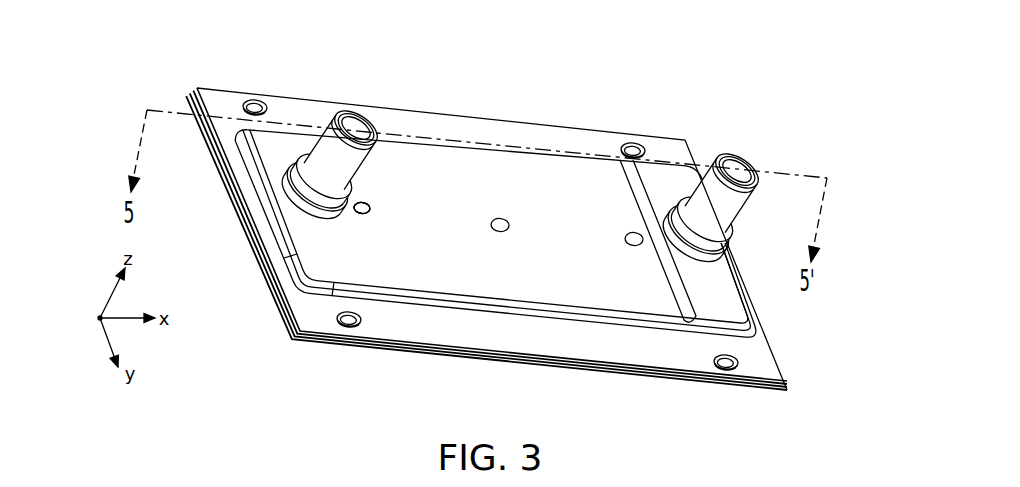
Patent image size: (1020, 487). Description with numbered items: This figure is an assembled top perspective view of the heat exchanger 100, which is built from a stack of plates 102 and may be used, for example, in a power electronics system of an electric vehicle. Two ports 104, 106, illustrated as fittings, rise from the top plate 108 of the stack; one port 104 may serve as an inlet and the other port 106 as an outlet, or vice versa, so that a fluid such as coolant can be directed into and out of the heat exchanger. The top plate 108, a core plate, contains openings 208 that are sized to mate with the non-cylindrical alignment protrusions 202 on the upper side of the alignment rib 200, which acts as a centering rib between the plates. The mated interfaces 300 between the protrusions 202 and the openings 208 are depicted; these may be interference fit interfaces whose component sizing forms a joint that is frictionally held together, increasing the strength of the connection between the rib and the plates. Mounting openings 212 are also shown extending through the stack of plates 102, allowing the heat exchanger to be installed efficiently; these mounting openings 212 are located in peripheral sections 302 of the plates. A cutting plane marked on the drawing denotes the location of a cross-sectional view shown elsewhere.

The heat exchanger 100 is at (128, 80).
The stack of plates 102 is at (212, 175).
The port 104 is at (333, 100).
The port 106 is at (715, 148).
The top plate 108 is at (503, 116).
The alignment rib 200 is at (633, 262).
The non-cylindrical alignment protrusions 202 is at (374, 208).
The openings 208 is at (370, 198).
The mounting openings 212 is at (250, 82).
The mated interfaces 300 is at (359, 238).
The peripheral sections 302 is at (297, 307).